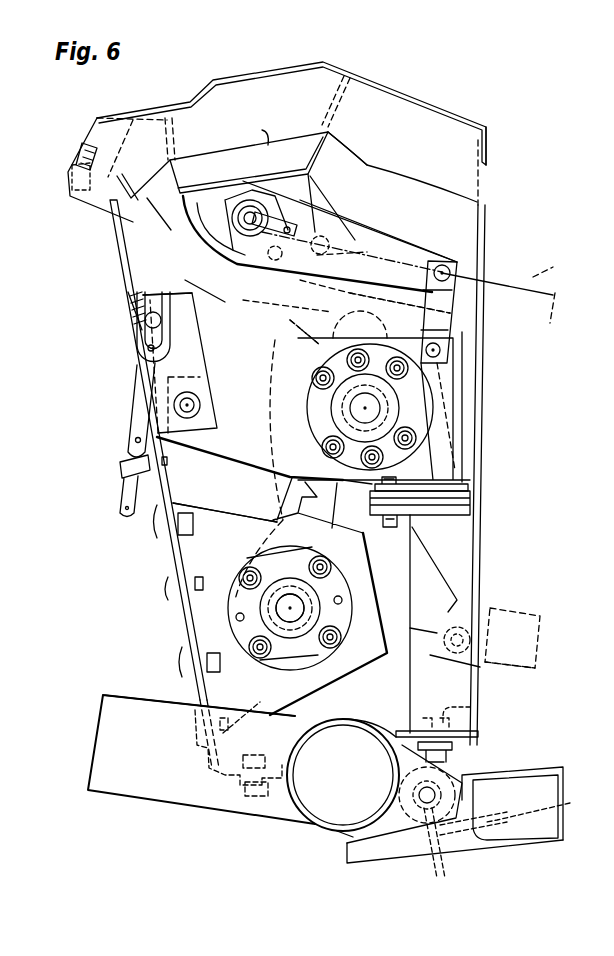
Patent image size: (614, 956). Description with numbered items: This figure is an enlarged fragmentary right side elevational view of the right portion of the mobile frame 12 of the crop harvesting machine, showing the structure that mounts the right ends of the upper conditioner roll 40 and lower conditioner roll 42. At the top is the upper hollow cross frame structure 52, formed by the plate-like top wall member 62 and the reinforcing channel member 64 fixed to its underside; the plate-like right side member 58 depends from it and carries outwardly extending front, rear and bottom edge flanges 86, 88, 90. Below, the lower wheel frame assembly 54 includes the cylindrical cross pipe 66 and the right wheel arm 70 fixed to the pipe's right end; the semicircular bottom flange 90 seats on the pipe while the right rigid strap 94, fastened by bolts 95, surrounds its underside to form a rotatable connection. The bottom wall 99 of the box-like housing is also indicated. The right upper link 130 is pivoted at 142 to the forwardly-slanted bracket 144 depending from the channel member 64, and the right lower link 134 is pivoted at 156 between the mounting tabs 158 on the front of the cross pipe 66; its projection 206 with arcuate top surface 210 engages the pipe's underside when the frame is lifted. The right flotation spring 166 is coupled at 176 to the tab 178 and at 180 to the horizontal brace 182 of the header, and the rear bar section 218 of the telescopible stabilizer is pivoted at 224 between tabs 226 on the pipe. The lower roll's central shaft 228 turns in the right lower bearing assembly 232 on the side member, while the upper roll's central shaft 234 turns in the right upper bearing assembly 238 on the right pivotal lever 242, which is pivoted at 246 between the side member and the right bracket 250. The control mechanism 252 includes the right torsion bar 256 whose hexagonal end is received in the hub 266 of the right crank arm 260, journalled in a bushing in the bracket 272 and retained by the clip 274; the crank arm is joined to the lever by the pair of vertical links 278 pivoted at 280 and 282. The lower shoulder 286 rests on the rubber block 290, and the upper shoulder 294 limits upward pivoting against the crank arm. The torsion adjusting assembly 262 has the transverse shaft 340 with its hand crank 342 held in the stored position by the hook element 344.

The mobile frame 12 is at (435, 85).
The upper conditioner roll 40 is at (290, 320).
The lower conditioner roll 42 is at (270, 512).
The upper hollow cross frame structure 52 is at (275, 62).
The lower wheel frame assembly 54 is at (263, 827).
The right side member 58 is at (380, 231).
The top wall member 62 is at (420, 100).
The channel member 64 is at (302, 170).
The cylindrical cross pipe 66 is at (322, 828).
The right wheel arm 70 is at (145, 806).
The front edge flange 86 is at (486, 226).
The rear edge flange 88 is at (111, 258).
The bottom edge flange 90 is at (359, 718).
The right rigid strap 94 is at (305, 828).
The bolts 95 is at (470, 707).
The bottom wall 99 is at (235, 800).
The right upper link 130 is at (553, 274).
The right lower link 134 is at (548, 848).
The pivotal connection 142 is at (371, 305).
The right forwardly-slanted bracket 144 is at (325, 185).
The pivotal connection 156 is at (437, 798).
The mounting tabs 158 is at (460, 768).
The right flotation spring 166 is at (267, 448).
The rear end coupling 176 is at (78, 153).
The tab 178 is at (83, 207).
The forward end coupling 180 is at (496, 605).
The horizontal brace 182 is at (523, 678).
The projection 206 is at (375, 865).
The arcuate top surface 210 is at (340, 833).
The rear bar section 218 is at (568, 803).
The pivotal connection 224 is at (445, 870).
The forwardly projecting tabs 226 is at (458, 860).
The central shaft 228 is at (296, 612).
The right lower bearing assembly 232 is at (258, 557).
The central shaft 234 is at (350, 408).
The right upper bearing assembly 238 is at (331, 368).
The right pivotal lever 242 is at (252, 359).
The pivotal mounting 246 is at (218, 455).
The right bracket 250 is at (197, 322).
The control mechanism 252 is at (357, 222).
The right torsion bar 256 is at (244, 200).
The right crank arm 260 is at (416, 245).
The torsion adjusting assembly 262 is at (127, 336).
The right hub 266 is at (202, 250).
The right bracket 272 is at (182, 238).
The clip 274 is at (262, 130).
The right pair of vertical links 278 is at (420, 384).
The upper pivotal connection 280 is at (450, 273).
The lower pivotal connection 282 is at (441, 352).
The lower shoulder 286 is at (470, 488).
The rubber block 290 is at (470, 496).
The upper shoulder 294 is at (377, 318).
The transverse shaft 340 is at (124, 294).
The hand crank 342 is at (133, 418).
The hook element 344 is at (120, 468).